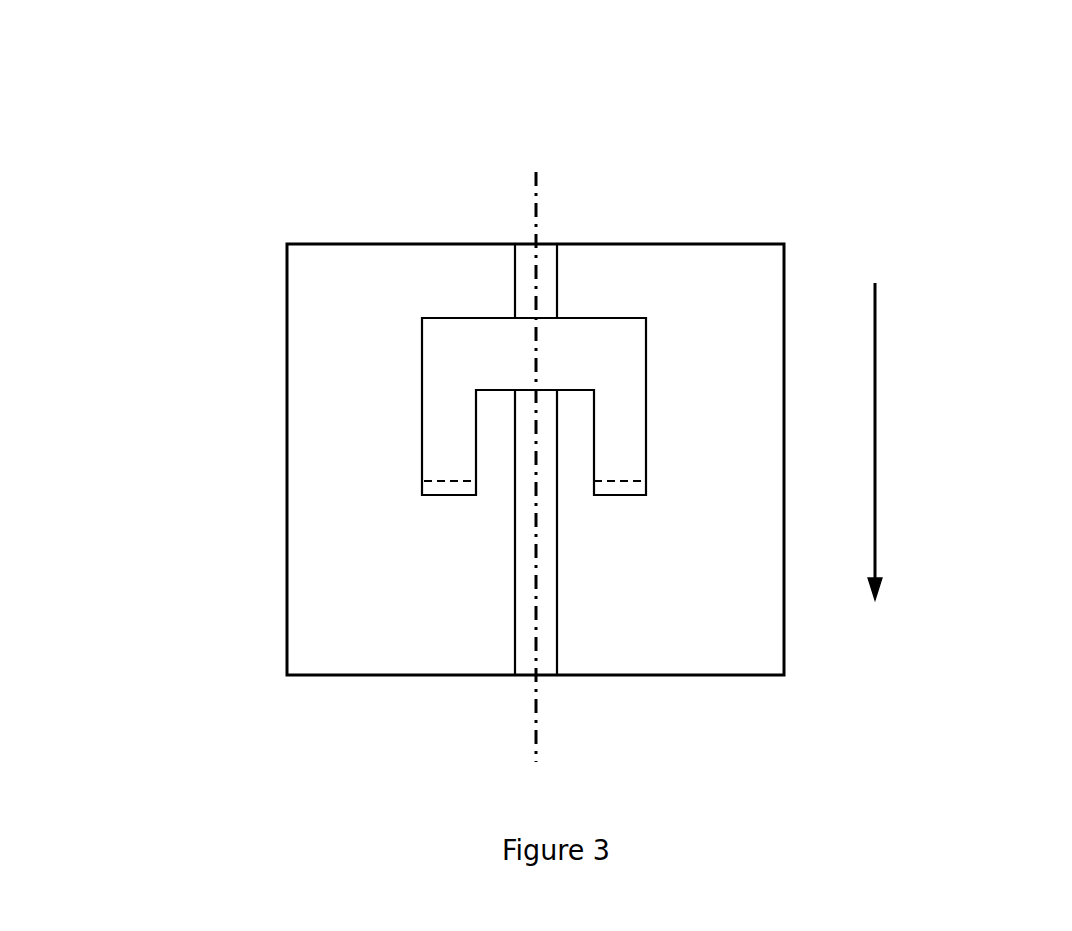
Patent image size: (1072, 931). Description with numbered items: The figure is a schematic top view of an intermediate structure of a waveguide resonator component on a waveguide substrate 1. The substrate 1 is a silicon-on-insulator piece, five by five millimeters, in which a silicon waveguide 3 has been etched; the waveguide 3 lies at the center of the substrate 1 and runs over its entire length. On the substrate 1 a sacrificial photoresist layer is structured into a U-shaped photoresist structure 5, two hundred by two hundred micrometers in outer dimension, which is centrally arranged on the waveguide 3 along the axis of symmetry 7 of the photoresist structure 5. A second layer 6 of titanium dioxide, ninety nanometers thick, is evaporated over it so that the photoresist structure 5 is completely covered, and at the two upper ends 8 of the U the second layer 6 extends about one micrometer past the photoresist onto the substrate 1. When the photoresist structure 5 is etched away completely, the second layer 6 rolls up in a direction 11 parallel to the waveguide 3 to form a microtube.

The substrate 1 is at (733, 242).
The waveguide 3 is at (545, 242).
The U-shaped photoresist structure 5 is at (417, 475).
The second layer 6 is at (422, 458).
The axis of symmetry 7 is at (538, 183).
The upper end of U-shaped structure 8 is at (617, 495).
The direction of rolling 11 is at (875, 453).